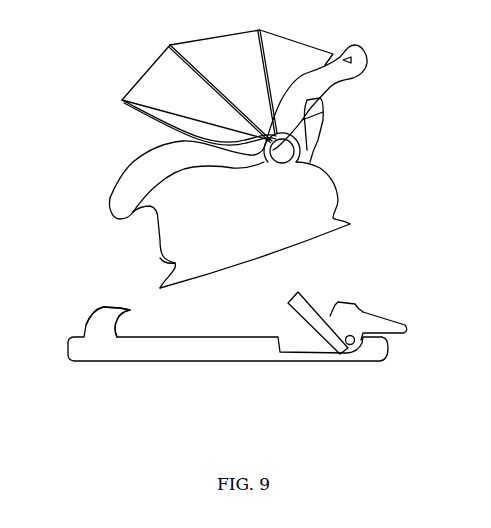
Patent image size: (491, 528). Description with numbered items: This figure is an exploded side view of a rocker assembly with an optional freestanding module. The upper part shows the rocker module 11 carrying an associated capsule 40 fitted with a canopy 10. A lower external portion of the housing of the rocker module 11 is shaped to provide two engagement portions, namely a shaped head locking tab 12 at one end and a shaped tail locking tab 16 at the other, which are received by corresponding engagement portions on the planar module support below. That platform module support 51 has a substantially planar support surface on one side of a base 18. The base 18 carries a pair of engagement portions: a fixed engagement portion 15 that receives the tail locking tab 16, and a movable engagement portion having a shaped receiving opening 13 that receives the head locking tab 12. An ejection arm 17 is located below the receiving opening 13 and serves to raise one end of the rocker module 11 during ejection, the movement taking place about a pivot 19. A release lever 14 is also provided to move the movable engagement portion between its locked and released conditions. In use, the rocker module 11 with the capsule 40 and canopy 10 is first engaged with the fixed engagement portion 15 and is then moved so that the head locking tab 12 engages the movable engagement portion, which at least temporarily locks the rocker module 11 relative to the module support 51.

The canopy 10 is at (185, 83).
The capsule 40 is at (128, 152).
The rocker module 11 is at (280, 227).
The head locking tab 12 is at (352, 222).
The shaped receiving opening 13 is at (337, 310).
The release lever 14 is at (403, 316).
The fixed engagement portion 15 is at (117, 320).
The tail locking tab 16 is at (157, 290).
The ejection arm 17 is at (282, 302).
The base 18 is at (137, 358).
The pivot 19 is at (347, 351).
The platform module support 51 is at (248, 375).